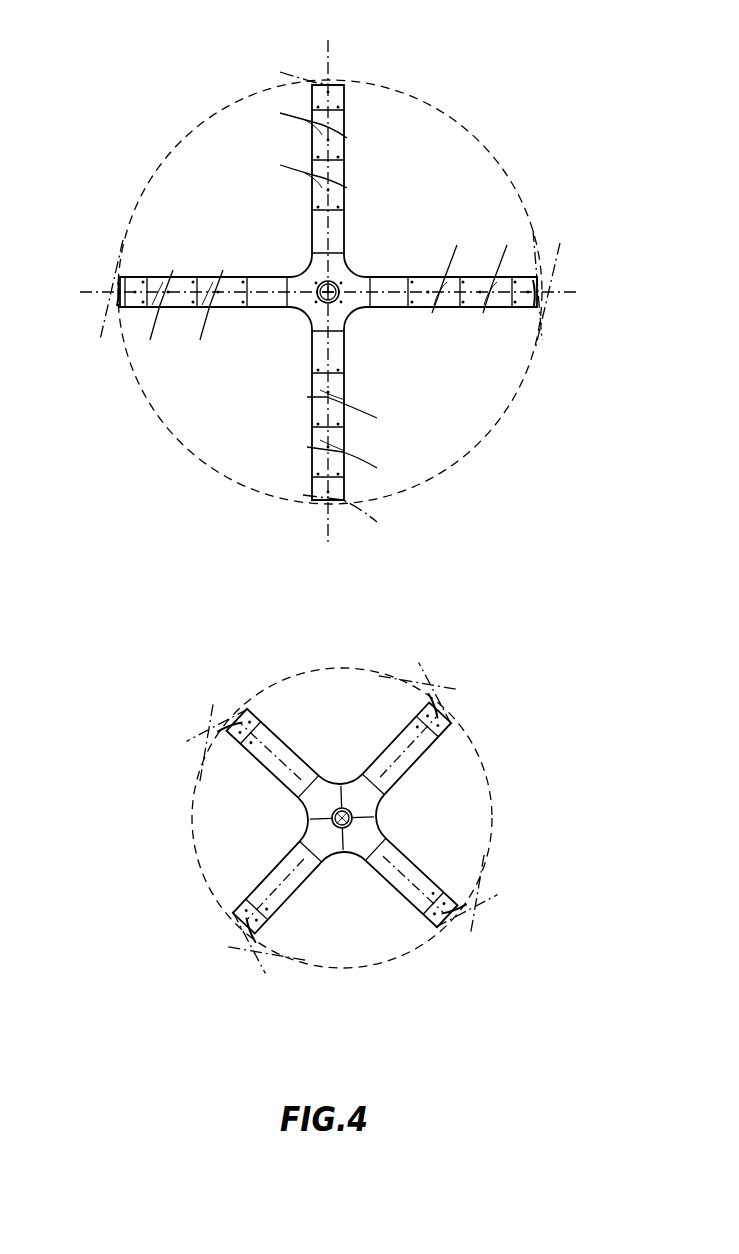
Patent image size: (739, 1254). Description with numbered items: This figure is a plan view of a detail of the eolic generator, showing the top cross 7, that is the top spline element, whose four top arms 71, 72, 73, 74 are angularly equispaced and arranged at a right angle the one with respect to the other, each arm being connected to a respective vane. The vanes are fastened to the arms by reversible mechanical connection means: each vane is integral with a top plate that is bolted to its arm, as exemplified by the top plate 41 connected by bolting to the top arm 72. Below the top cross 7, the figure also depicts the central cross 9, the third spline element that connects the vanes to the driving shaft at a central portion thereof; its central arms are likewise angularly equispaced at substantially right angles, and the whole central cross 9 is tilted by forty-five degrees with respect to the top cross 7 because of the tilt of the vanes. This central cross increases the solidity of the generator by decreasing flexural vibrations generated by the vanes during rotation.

The top spline element 7 is at (177, 119).
The third spline element 9 is at (494, 797).
The top plate 41 is at (522, 300).
The top arm 71 is at (318, 462).
The top arm 72 is at (477, 275).
The top arm 73 is at (333, 123).
The top arm 74 is at (178, 306).